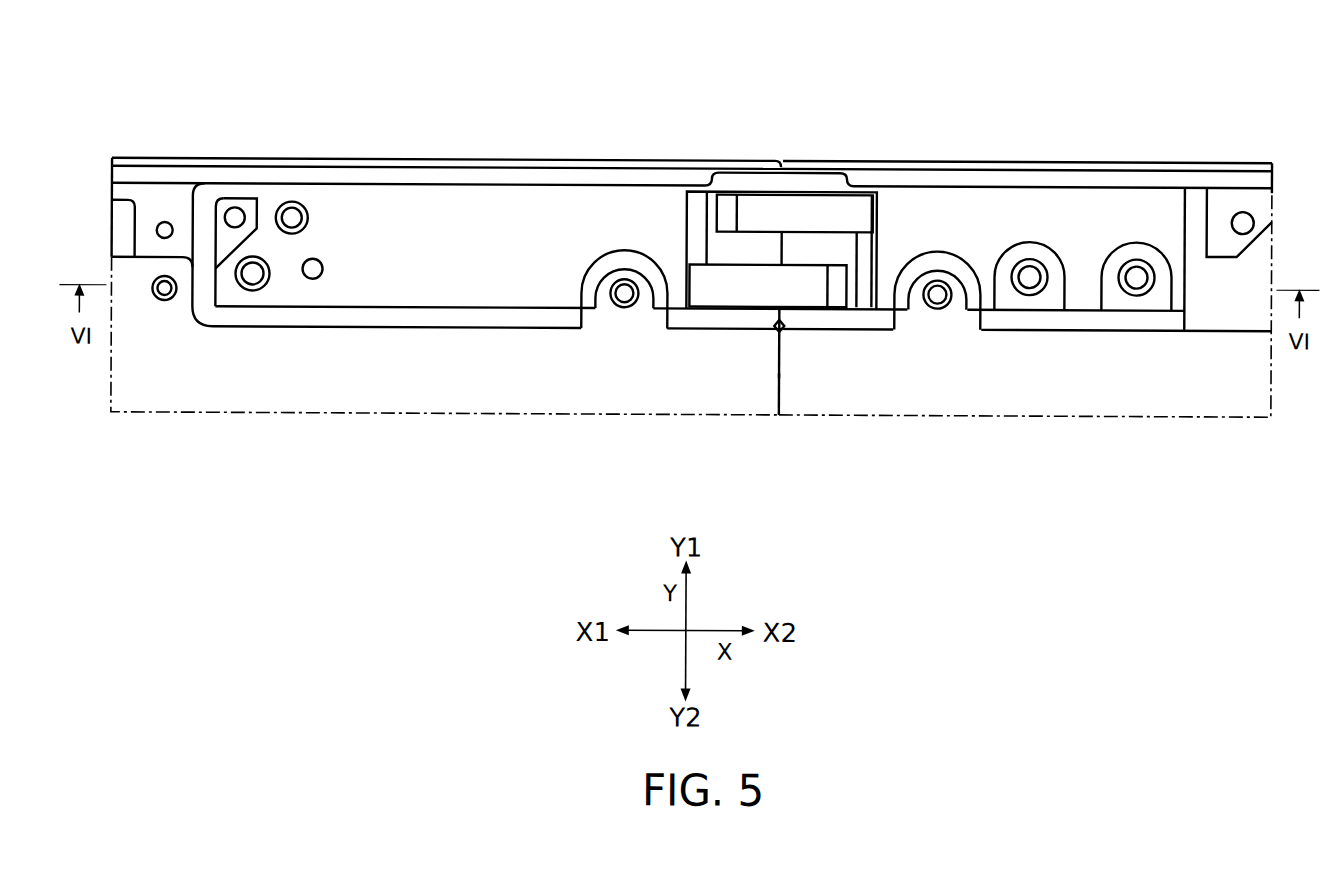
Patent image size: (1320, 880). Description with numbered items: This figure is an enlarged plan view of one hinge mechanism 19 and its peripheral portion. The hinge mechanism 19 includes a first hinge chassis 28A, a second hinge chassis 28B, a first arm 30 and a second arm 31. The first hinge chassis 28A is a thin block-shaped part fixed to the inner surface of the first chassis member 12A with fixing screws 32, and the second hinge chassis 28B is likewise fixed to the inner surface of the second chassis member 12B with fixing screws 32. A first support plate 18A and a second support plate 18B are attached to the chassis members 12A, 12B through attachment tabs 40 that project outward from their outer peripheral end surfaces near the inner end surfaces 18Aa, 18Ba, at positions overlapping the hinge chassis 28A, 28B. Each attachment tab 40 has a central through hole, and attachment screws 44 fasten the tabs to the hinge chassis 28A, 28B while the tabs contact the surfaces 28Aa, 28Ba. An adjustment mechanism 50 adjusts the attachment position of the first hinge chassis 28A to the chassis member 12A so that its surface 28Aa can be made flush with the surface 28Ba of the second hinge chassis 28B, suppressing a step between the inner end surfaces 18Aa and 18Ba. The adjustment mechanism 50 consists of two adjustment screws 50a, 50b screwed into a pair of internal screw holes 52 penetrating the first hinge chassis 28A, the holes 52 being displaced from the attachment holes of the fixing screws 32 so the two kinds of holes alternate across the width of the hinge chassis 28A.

The first chassis member 12A is at (470, 146).
The second chassis member 12B is at (1090, 146).
The first support plate 18A is at (455, 395).
The inner end surface of the first support plate 18Aa is at (780, 373).
The second support plate 18B is at (1012, 400).
The inner end surface of the second support plate 18Ba is at (780, 376).
The hinge mechanism 19 is at (375, 340).
The first hinge chassis 28A is at (538, 205).
The surface of the first hinge chassis 28Aa is at (397, 205).
The second hinge chassis 28B is at (1017, 207).
The surface of the second hinge chassis 28Ba is at (1163, 208).
The first arm 30 is at (752, 270).
The second arm 31 is at (822, 206).
The fixing screw 32 is at (291, 227).
The attachment tab 40 is at (627, 266).
The attachment screw 44 is at (624, 300).
The adjustment mechanism 50 is at (207, 66).
The adjustment screw 50a is at (235, 207).
The adjustment screw 50b is at (313, 258).
The internal screw hole 52 is at (230, 212).